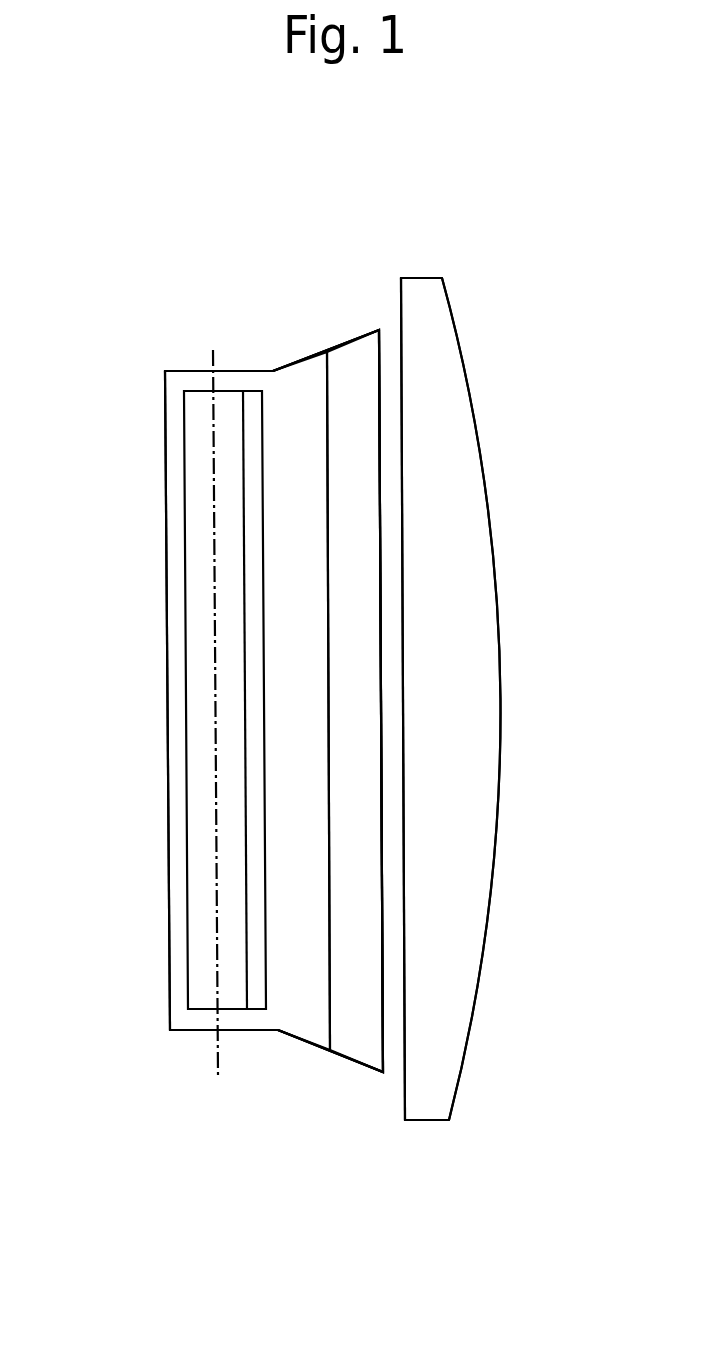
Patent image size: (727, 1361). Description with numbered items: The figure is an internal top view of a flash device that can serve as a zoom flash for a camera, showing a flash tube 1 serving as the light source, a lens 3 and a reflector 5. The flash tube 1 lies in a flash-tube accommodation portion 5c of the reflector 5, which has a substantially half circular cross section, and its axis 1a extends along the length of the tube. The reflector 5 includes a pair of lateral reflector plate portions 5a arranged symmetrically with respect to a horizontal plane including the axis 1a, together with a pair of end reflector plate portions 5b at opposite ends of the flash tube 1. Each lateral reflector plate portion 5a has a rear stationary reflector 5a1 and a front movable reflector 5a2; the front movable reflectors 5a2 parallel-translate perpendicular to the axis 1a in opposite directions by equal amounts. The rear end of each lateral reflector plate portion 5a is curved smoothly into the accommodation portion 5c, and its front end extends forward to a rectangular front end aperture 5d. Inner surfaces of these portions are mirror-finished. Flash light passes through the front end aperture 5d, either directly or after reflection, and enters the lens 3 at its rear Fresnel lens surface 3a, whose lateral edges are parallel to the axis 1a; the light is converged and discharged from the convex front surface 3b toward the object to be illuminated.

The flash tube 1 is at (203, 1010).
The axis of the flash tube 1a is at (218, 992).
The lens 3 is at (472, 1060).
The Fresnel lens surface 3a is at (403, 1088).
The convex surface 3b is at (485, 947).
The reflector 5 is at (333, 1060).
The lateral reflector plate portions 5a is at (347, 226).
The rear stationary reflector 5a1 is at (293, 390).
The front movable reflector 5a2 is at (343, 387).
The end reflector plate portions 5b is at (353, 338).
The flash-tube accommodation portion 5c is at (167, 852).
The front end aperture 5d is at (381, 363).